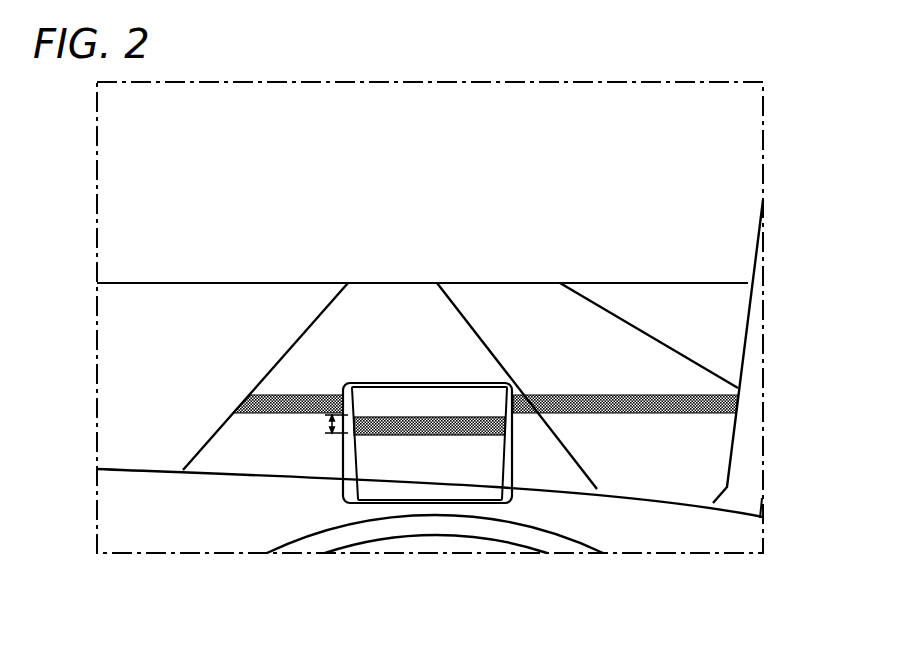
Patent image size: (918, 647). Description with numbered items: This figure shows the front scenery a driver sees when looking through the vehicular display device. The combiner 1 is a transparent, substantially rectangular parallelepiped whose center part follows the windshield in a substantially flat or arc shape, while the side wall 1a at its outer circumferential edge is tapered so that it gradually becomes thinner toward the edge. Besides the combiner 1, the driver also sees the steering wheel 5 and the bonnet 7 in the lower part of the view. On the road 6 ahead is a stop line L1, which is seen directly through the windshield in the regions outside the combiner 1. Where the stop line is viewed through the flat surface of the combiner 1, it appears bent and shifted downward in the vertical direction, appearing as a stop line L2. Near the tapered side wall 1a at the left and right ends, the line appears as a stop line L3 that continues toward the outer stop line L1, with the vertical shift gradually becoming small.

The combiner 1 is at (417, 387).
The side wall 1a is at (352, 458).
The steering wheel 5 is at (370, 532).
The road 6 is at (632, 350).
The bonnet 7 is at (680, 533).
The stop line L1 is at (690, 400).
The stop line L2 is at (450, 428).
The stop line L3 is at (349, 403).